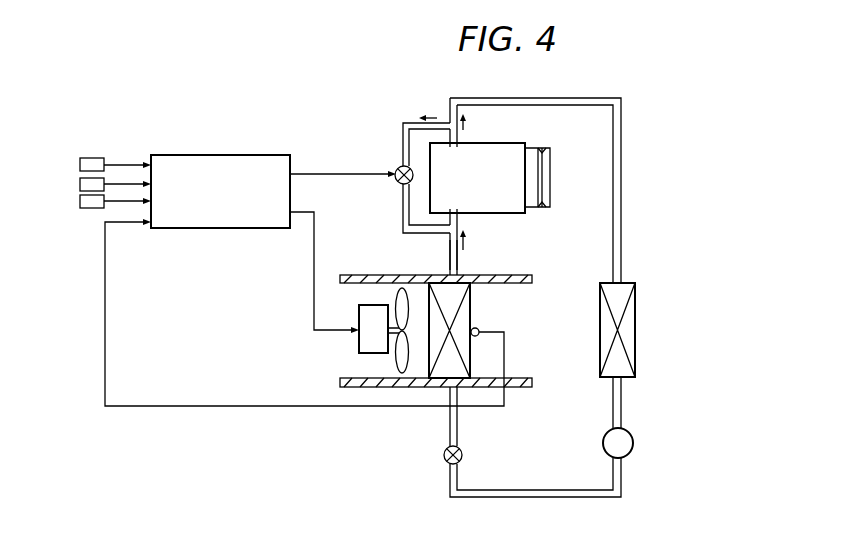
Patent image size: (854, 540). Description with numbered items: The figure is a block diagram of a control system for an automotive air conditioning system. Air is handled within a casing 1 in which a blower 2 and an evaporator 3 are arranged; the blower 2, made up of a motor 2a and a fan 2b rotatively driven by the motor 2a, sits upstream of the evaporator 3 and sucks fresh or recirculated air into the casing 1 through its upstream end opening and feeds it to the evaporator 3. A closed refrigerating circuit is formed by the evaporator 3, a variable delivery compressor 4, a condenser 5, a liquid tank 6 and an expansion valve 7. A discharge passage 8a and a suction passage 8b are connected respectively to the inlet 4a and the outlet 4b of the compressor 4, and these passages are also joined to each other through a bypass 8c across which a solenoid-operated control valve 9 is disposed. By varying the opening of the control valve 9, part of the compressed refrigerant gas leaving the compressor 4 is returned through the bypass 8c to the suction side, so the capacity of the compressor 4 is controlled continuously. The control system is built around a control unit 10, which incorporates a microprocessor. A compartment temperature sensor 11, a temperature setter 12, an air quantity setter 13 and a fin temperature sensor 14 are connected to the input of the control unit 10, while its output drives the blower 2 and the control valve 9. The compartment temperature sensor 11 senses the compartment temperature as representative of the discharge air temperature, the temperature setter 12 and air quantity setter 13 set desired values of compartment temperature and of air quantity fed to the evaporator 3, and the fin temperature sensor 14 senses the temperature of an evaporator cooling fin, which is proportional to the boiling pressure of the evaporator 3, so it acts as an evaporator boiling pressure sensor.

The casing 1 is at (518, 276).
The blower 2 is at (350, 343).
The motor 2a is at (373, 315).
The fan 2b is at (393, 363).
The evaporator 3 is at (458, 298).
The variable delivery compressor 4 is at (510, 148).
The inlet 4a is at (455, 148).
The outlet 4b is at (455, 213).
The condenser 5 is at (637, 320).
The liquid tank 6 is at (634, 443).
The expansion valve 7 is at (445, 453).
The discharge passage 8a is at (448, 104).
The suction passage 8b is at (448, 252).
The bypass 8c is at (403, 135).
The solenoid-operated control valve 9 is at (395, 170).
The control unit 10 is at (211, 155).
The compartment temperature sensor 11 is at (76, 164).
The temperature setter 12 is at (76, 185).
The air quantity setter 13 is at (76, 204).
The fin temperature sensor 14 is at (480, 330).